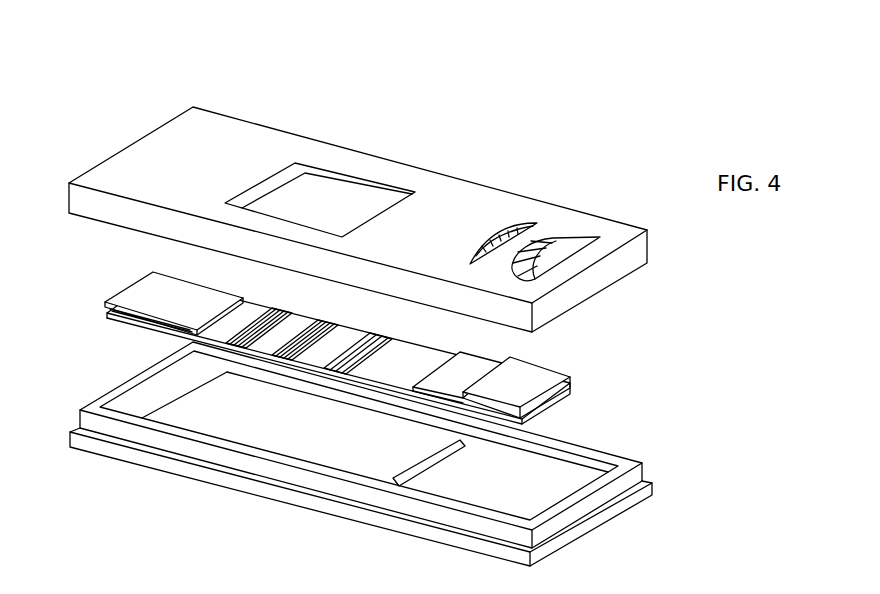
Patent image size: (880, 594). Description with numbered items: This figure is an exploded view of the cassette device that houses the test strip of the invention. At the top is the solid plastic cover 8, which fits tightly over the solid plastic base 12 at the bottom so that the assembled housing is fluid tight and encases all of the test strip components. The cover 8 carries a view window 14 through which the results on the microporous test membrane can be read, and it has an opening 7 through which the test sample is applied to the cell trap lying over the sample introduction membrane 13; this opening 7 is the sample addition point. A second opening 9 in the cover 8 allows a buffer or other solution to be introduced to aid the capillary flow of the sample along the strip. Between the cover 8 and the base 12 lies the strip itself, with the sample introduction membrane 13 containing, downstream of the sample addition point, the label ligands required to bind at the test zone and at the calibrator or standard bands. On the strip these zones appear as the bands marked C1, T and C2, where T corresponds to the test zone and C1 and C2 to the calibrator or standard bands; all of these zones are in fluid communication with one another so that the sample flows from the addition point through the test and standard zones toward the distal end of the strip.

The opening 7 is at (517, 227).
The cover 8 is at (450, 188).
The opening 9 is at (572, 242).
The base 12 is at (600, 458).
The sample introduction membrane 13 is at (570, 377).
The view window 14 is at (302, 175).
The first control line C1 is at (264, 322).
The test line T is at (308, 334).
The second control line C2 is at (359, 346).